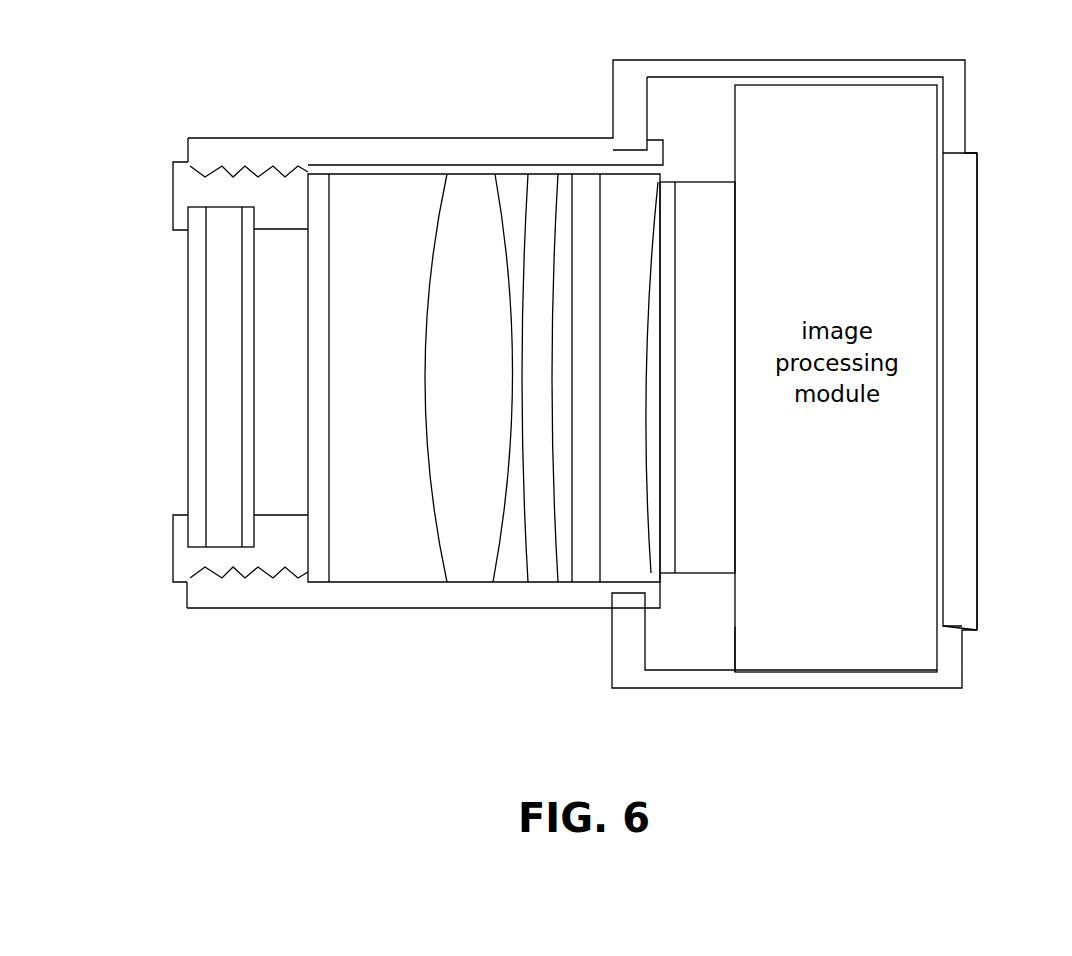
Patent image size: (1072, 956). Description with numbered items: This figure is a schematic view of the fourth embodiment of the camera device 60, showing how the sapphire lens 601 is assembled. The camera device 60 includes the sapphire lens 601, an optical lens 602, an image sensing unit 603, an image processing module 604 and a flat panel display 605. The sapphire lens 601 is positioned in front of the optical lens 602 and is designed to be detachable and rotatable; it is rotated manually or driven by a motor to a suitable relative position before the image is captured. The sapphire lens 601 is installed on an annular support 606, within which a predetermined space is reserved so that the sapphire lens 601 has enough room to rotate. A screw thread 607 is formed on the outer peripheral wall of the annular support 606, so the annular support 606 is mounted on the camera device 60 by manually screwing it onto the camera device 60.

The camera device 60 is at (252, 754).
The sapphire lens 601 is at (188, 384).
The optical lens 602 is at (308, 400).
The image sensing unit 603 is at (698, 181).
The image processing module 604 is at (733, 627).
The flat panel display 605 is at (977, 548).
The annular support 606 is at (180, 203).
The screw thread 607 is at (197, 175).